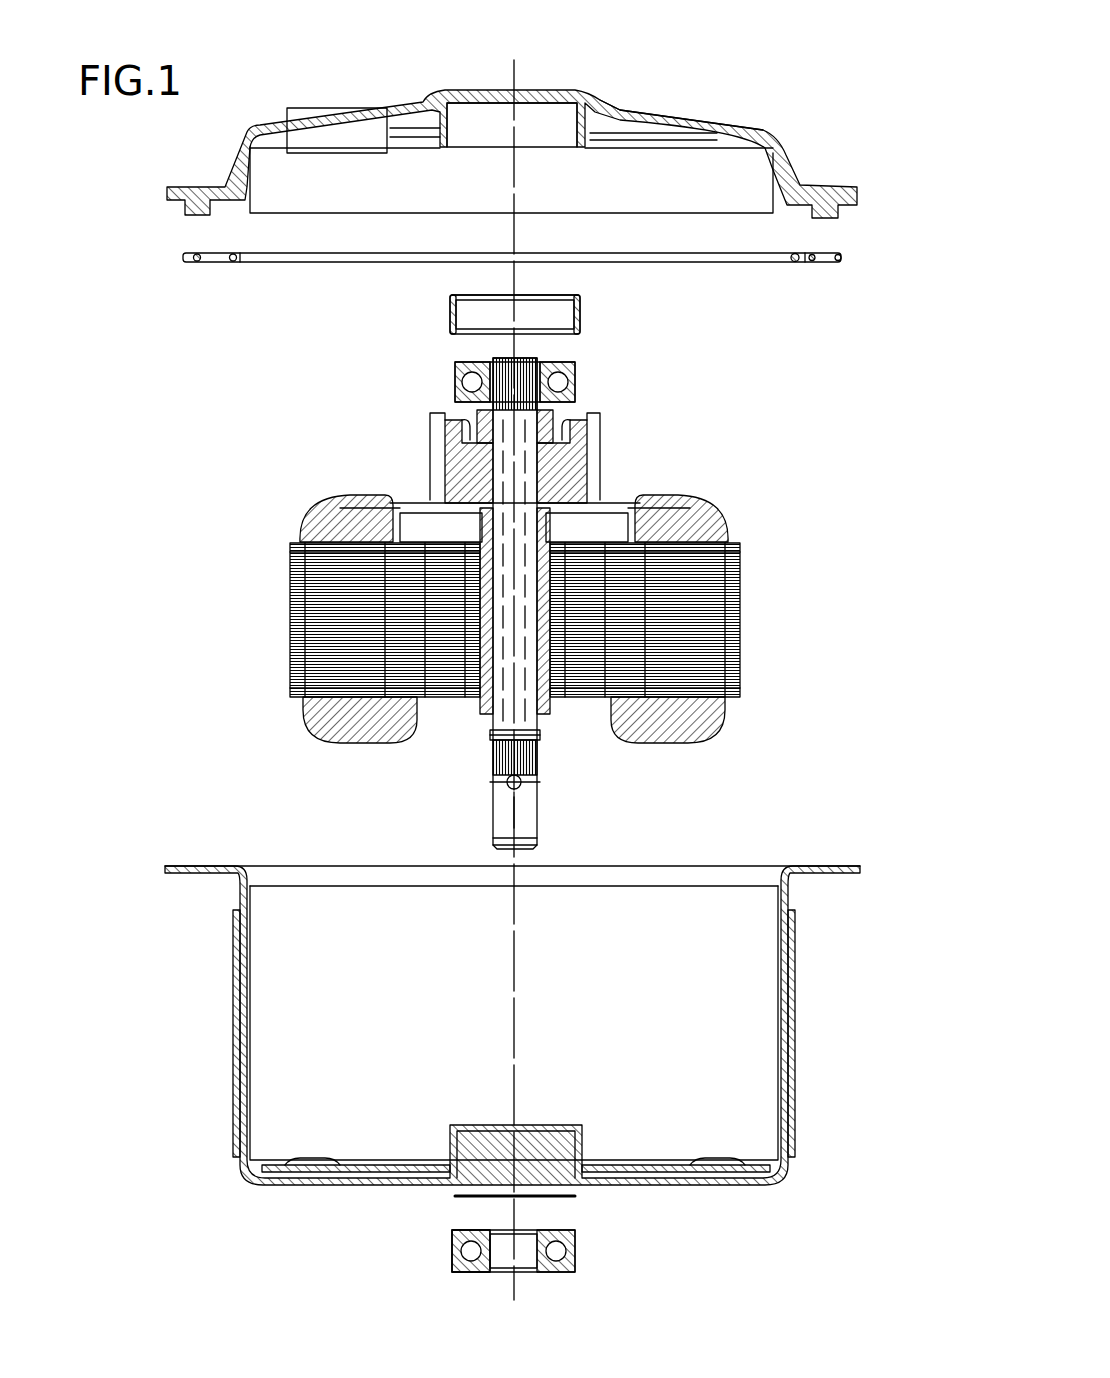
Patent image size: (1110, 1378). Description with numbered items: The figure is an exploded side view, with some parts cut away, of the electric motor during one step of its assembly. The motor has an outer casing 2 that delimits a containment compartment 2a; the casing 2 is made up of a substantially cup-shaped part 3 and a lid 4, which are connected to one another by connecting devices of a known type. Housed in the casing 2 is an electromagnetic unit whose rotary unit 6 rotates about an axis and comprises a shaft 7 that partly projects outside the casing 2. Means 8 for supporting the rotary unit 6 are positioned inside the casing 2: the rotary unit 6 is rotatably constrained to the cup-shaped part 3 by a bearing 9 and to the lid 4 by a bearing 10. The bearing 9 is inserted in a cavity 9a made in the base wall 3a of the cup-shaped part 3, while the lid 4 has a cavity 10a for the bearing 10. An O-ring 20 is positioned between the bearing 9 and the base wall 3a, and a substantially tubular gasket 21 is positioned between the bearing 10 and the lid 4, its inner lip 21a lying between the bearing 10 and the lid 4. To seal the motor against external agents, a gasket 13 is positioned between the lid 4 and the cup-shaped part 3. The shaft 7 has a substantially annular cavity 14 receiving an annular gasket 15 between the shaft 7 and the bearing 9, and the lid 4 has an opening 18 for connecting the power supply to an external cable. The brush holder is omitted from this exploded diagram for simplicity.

The outer casing 2 is at (622, 83).
The containment compartment 2a is at (737, 184).
The cup-shaped part 3 is at (801, 1015).
The base wall 3a is at (304, 1181).
The lid 4 is at (690, 117).
The rotary unit 6 is at (714, 502).
The shaft 7 is at (489, 808).
The means for supporting the rotary unit 8 is at (582, 352).
The bearing 9 is at (451, 1263).
The cavity 9a is at (561, 1151).
The bearing 10 is at (578, 385).
The cavity 10a is at (492, 134).
The gasket 13 is at (745, 270).
The annular cavity 14 is at (496, 731).
The annular gasket 15 is at (538, 733).
The opening 18 is at (316, 106).
The O-ring 20 is at (461, 1199).
The gasket 21 is at (447, 315).
The inner lip 21a is at (456, 292).